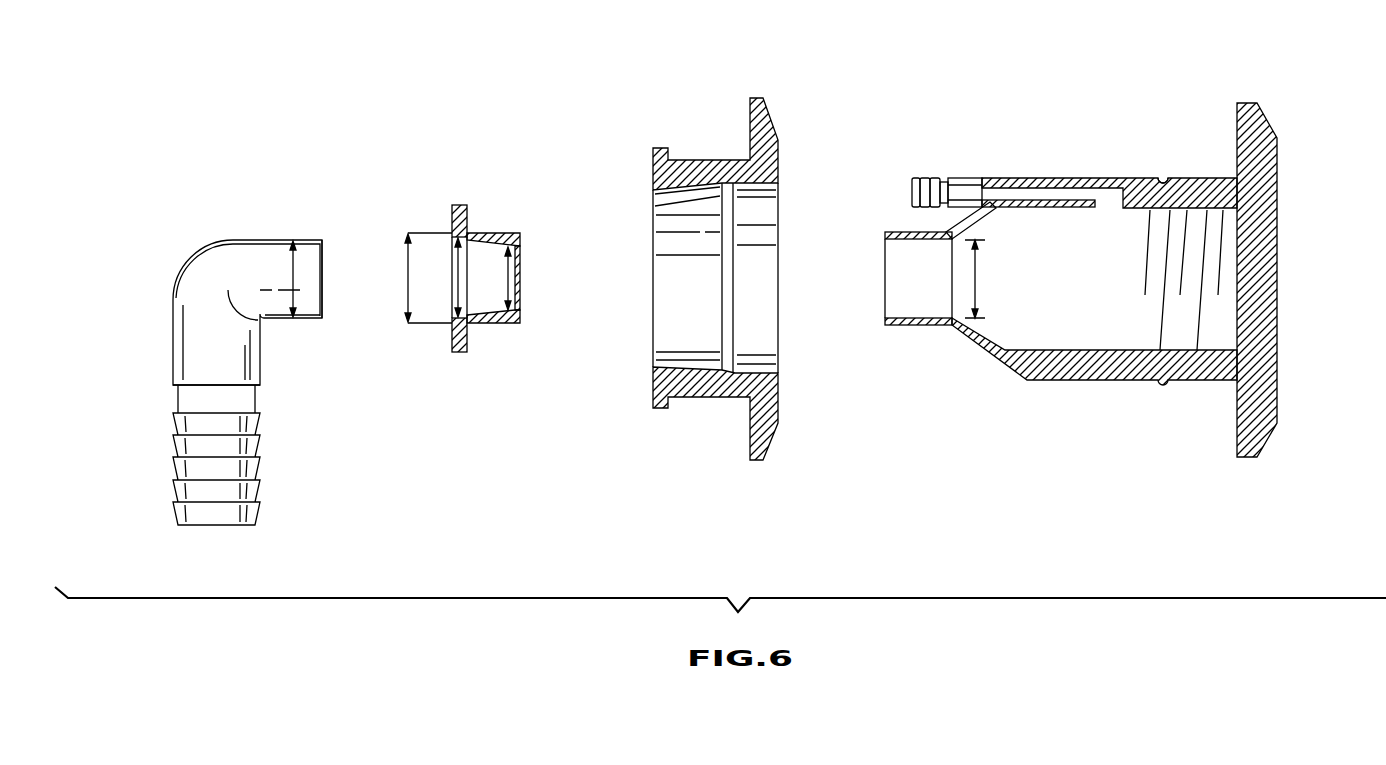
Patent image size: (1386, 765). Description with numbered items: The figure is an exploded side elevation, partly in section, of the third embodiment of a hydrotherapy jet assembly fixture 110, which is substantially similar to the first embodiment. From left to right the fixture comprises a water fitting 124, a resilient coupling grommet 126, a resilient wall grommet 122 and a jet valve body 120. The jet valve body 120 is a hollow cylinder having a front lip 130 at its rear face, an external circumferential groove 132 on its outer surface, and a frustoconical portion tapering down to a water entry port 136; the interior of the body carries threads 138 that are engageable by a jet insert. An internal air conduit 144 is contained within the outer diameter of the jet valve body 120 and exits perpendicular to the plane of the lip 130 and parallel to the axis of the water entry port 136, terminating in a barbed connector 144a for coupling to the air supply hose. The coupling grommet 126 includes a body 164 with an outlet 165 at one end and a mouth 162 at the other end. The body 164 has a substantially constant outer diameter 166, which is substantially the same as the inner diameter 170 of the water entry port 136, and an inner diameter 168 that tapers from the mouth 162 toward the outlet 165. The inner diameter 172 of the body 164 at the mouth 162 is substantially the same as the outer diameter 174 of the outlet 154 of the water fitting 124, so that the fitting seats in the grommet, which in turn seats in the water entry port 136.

The hydrotherapy jet assembly fixture 110 is at (1081, 287).
The jet valve body 120 is at (1081, 257).
The resilient wall grommet 122 is at (712, 160).
The water fitting 124 is at (212, 243).
The resilient coupling grommet 126 is at (472, 240).
The front lip 130 is at (1277, 158).
The external circumferential groove 132 is at (1164, 178).
The water entry port 136 is at (888, 270).
The threads 138 is at (1220, 243).
The overflow conduit 144 is at (1012, 178).
The barbed nipple 144a is at (912, 178).
The outlet 154 is at (322, 262).
The mouth 162 is at (453, 263).
The body 164 is at (507, 233).
The outlet 165 is at (522, 262).
The outer diameter 166 is at (408, 276).
The inner diameter 168 is at (508, 283).
The inner diameter 170 is at (983, 270).
The inner diameter 172 is at (460, 280).
The outer diameter 174 is at (297, 297).